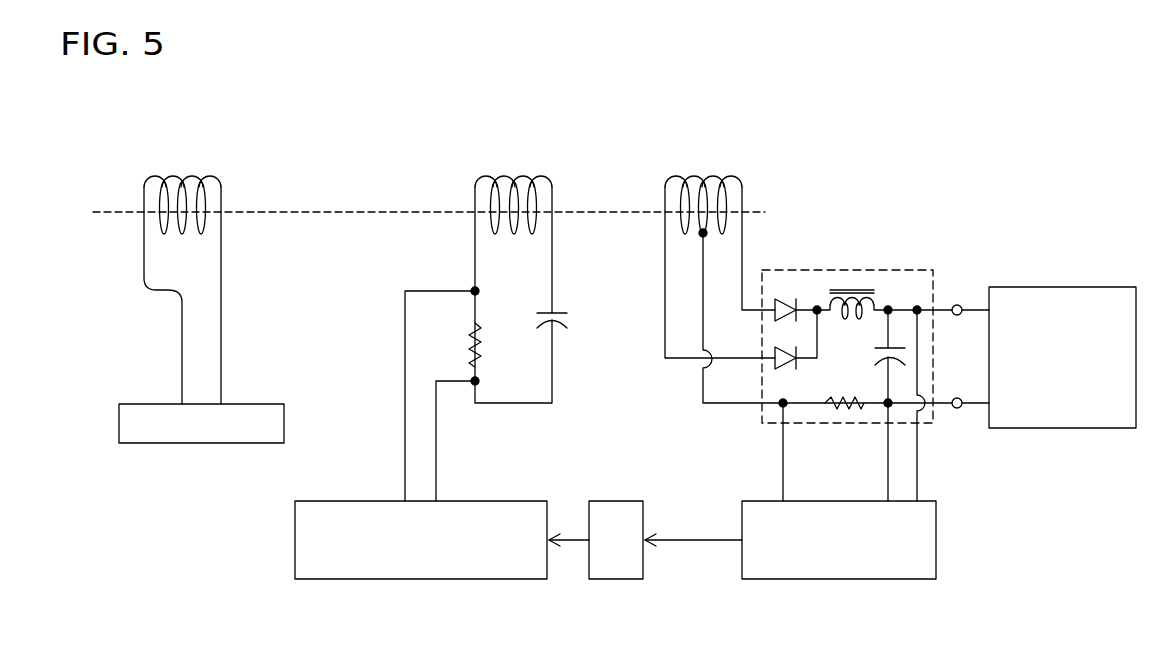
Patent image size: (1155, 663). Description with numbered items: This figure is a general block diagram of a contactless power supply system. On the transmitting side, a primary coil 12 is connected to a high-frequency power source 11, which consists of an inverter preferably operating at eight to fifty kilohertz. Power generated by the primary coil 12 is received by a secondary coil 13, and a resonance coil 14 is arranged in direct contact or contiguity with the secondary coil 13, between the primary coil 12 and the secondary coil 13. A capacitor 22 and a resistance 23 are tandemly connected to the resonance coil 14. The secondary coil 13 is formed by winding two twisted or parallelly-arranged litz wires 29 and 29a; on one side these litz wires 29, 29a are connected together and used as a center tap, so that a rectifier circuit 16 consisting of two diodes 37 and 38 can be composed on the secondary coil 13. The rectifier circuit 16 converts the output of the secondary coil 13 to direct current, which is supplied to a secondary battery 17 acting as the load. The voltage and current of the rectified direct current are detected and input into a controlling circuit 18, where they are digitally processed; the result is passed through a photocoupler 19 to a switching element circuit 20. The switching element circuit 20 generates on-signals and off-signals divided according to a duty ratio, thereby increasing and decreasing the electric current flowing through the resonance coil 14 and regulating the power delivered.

The high-frequency power source 11 is at (182, 444).
The primary coil 12 is at (192, 168).
The secondary coil 13 is at (806, 247).
The resonance coil 14 is at (506, 170).
The rectifier circuit 16 is at (839, 344).
The secondary battery 17 is at (1023, 285).
The controlling circuit 18 is at (872, 573).
The photocoupler 19 is at (625, 571).
The switching element circuit 20 is at (455, 580).
The capacitor 22 is at (568, 318).
The resistance 23 is at (483, 343).
The litz wire 29 is at (673, 177).
The litz wire 29a is at (743, 193).
The diode 37 is at (782, 303).
The diode 38 is at (778, 365).